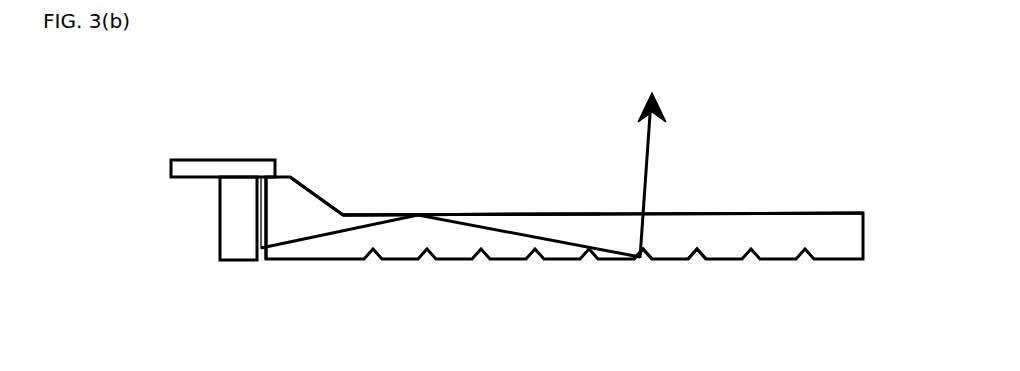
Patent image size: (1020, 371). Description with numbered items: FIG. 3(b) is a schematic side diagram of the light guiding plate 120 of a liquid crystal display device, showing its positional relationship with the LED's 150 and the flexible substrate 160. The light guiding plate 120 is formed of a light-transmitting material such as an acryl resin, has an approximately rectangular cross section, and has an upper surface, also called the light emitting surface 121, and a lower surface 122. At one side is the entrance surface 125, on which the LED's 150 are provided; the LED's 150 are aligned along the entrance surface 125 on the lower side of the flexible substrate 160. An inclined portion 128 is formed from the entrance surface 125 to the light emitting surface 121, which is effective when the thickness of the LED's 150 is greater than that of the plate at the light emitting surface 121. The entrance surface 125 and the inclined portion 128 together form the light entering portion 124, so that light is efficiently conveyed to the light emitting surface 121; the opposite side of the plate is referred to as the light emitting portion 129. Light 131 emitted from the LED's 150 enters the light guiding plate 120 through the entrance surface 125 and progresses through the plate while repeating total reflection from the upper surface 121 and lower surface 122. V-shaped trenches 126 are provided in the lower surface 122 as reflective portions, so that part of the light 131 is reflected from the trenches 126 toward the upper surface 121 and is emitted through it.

The light guiding plate 120 is at (503, 243).
The light emitting surface 121 is at (730, 213).
The lower surface 122 is at (722, 260).
The light entering portion 124 is at (288, 253).
The entrance surface 125 is at (258, 218).
The trenches 126 is at (643, 258).
The inclined portion 128 is at (313, 210).
The light emitting portion 129 is at (515, 213).
The light 131 is at (440, 222).
The LED's 150 is at (235, 247).
The flexible substrate 160 is at (232, 160).